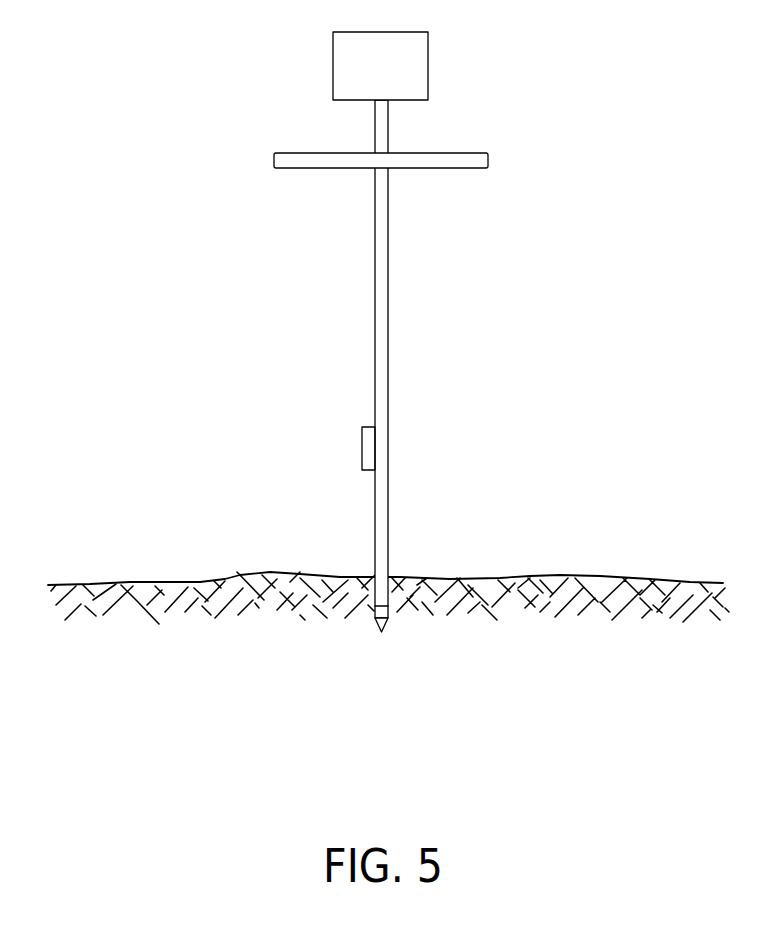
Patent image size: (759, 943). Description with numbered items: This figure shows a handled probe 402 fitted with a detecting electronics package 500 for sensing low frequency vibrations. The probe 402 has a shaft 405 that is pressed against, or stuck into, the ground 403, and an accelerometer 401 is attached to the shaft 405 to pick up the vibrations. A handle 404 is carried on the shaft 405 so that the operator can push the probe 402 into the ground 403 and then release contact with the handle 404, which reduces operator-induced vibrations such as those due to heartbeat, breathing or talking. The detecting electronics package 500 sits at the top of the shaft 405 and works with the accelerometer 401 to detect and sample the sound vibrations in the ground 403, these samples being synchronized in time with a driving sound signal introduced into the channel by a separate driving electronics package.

The detecting electronics package 500 is at (438, 65).
The handle 404 is at (455, 170).
The shaft 405 is at (389, 510).
The accelerometer 401 is at (362, 445).
The probe 402 is at (388, 626).
The ground 403 is at (140, 585).